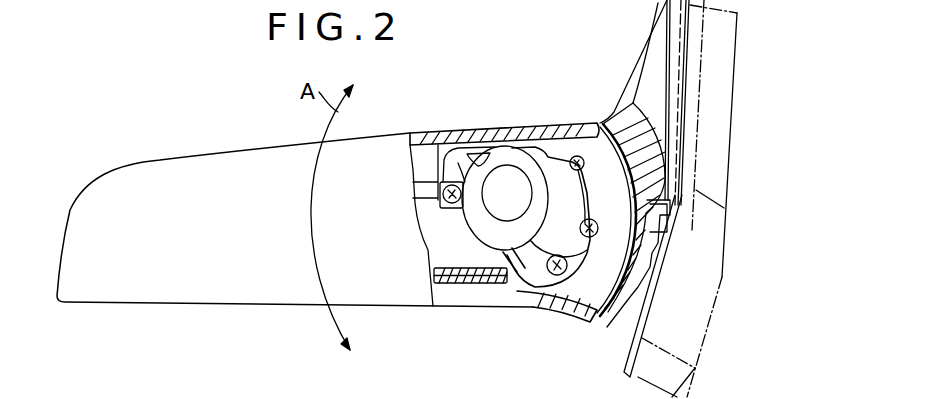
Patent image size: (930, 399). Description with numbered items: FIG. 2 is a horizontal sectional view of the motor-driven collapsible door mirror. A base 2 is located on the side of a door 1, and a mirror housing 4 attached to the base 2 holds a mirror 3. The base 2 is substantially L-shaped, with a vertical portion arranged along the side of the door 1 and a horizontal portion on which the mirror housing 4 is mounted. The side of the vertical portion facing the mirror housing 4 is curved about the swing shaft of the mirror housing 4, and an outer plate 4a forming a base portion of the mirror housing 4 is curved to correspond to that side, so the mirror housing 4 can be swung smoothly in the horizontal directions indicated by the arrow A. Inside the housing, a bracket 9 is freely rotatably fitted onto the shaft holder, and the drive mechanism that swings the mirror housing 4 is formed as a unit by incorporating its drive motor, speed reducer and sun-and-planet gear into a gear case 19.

The door 1 is at (726, 98).
The base 2 is at (656, 74).
The mirror 3 is at (468, 290).
The mirror housing 4 is at (217, 168).
The outer plate 4a is at (637, 163).
The bracket 9 is at (422, 203).
The gear case 19 is at (510, 297).